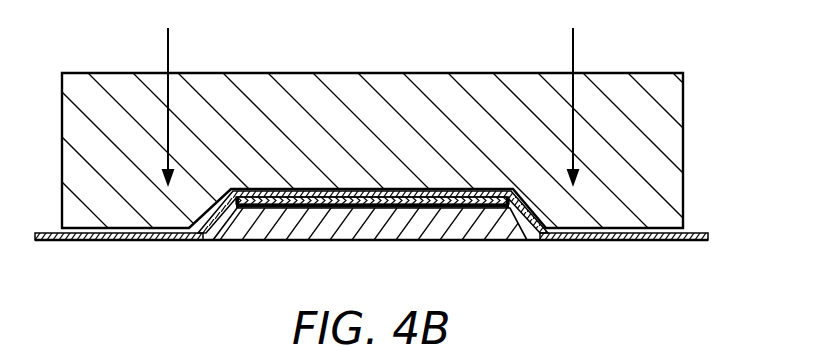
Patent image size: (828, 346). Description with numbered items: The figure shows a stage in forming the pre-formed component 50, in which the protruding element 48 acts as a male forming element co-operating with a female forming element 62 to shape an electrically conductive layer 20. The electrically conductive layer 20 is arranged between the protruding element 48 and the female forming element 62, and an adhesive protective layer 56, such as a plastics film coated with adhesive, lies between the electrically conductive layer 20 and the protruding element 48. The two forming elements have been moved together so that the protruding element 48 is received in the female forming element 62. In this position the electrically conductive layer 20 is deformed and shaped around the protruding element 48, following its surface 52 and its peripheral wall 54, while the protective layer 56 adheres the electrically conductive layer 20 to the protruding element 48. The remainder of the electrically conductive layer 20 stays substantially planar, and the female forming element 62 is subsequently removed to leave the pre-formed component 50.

The electrically conductive layer 20 is at (658, 241).
The protruding element 48 is at (373, 228).
The pre-formed component 50 is at (342, 248).
The surface 52 is at (298, 208).
The peripheral wall 54 is at (218, 215).
The protective layer 56 is at (458, 205).
The female forming element 62 is at (657, 82).